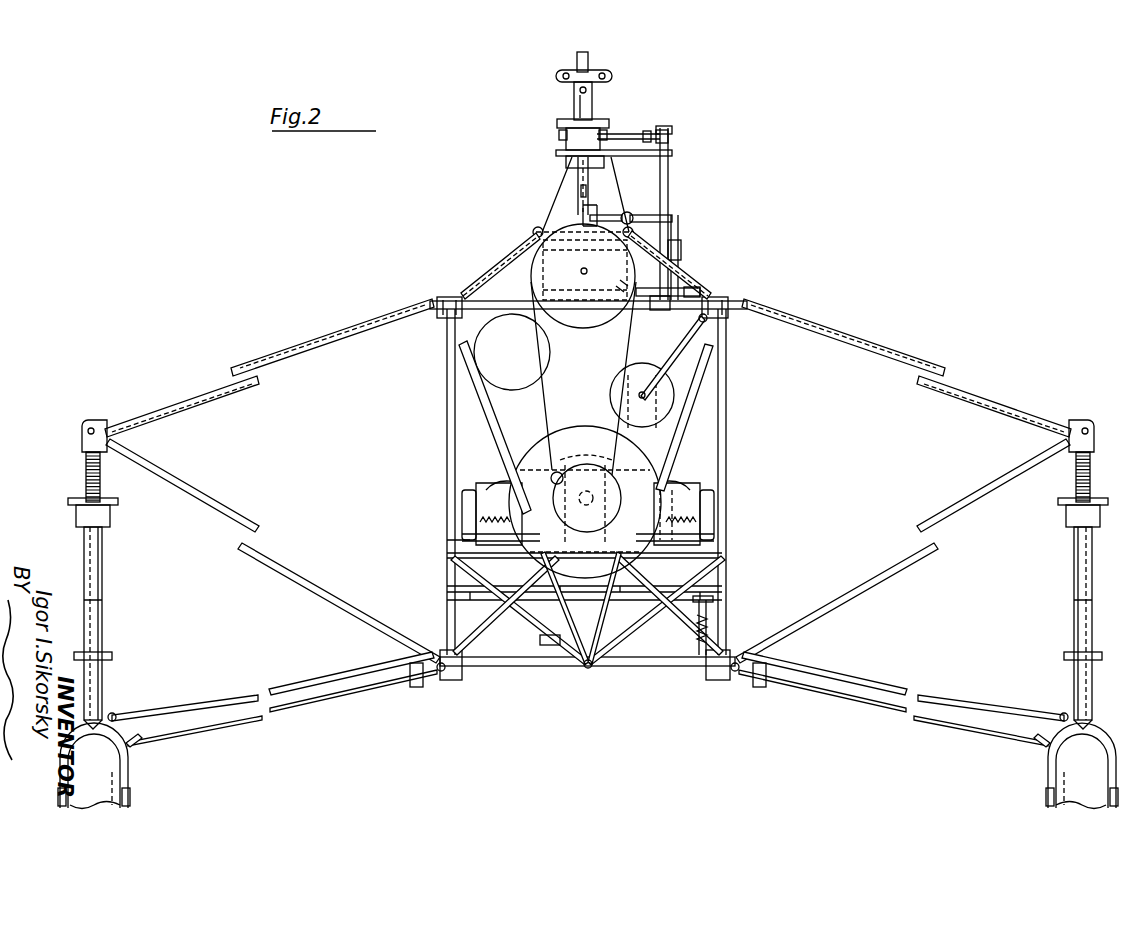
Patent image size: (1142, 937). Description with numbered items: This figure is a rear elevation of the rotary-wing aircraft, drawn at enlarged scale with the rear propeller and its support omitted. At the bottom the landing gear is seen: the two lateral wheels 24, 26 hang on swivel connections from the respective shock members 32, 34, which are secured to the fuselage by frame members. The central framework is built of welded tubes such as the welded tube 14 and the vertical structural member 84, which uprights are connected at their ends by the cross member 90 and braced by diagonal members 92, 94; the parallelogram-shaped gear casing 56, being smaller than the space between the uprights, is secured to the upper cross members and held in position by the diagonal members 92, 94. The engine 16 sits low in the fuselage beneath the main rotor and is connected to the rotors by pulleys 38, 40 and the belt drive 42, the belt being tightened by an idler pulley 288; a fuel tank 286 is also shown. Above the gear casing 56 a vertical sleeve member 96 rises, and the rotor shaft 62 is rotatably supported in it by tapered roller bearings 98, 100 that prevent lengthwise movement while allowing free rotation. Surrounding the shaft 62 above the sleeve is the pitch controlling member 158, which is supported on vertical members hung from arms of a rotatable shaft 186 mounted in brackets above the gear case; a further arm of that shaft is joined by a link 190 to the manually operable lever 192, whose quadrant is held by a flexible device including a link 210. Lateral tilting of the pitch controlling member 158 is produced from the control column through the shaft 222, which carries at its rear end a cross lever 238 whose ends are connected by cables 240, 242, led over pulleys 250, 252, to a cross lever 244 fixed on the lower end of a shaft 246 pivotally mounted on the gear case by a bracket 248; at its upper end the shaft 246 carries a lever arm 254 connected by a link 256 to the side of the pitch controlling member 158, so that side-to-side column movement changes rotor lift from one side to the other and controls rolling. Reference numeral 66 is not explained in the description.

The welded tube 14 is at (446, 533).
The engine 16 is at (490, 470).
The lateral wheel 24 is at (129, 778).
The lateral wheel 26 is at (1062, 767).
The shock member 32 is at (107, 587).
The shock member 34 is at (1073, 566).
The pulley 38 is at (557, 474).
The pulley 40 is at (563, 322).
The belt drive 42 is at (543, 391).
The gear casing 56 is at (534, 290).
The shaft 62 is at (592, 108).
The pin 66 is at (588, 274).
The vertical structural member 84 is at (727, 418).
The cross member 90 is at (473, 292).
The diagonal member 92 is at (683, 268).
The diagonal member 94 is at (511, 258).
The vertical sleeve member 96 is at (568, 197).
The tapered roller bearing 98 is at (600, 159).
The tapered roller bearing 100 is at (608, 213).
The pitch controlling member 158 is at (548, 130).
The rotatable shaft 186 is at (634, 214).
The link 190 is at (677, 247).
The manually operable lever 192 is at (700, 468).
The link 210 is at (720, 615).
The shaft 222 is at (602, 670).
The cross lever 238 is at (560, 653).
The cable 240 is at (557, 620).
The cable 242 is at (638, 629).
The cross lever 244 is at (691, 290).
The shaft 246 is at (668, 173).
The bracket 248 is at (631, 309).
The pulley 250 is at (624, 282).
The pulley 252 is at (730, 296).
The lever arm 254 is at (532, 231).
The link 256 is at (627, 133).
The fuel tank 286 is at (447, 390).
The idler pulley 288 is at (617, 370).